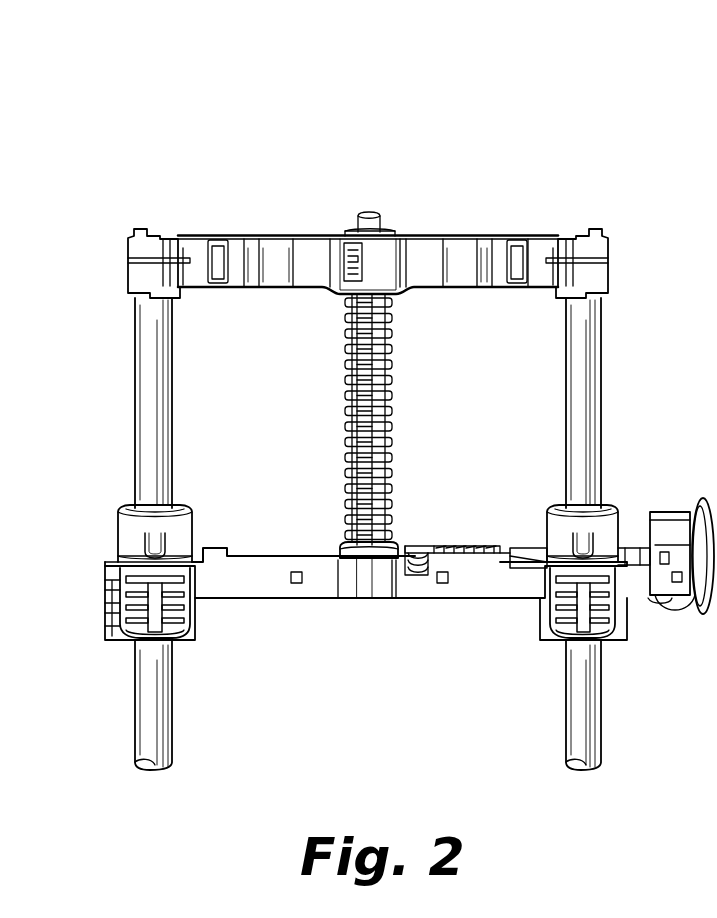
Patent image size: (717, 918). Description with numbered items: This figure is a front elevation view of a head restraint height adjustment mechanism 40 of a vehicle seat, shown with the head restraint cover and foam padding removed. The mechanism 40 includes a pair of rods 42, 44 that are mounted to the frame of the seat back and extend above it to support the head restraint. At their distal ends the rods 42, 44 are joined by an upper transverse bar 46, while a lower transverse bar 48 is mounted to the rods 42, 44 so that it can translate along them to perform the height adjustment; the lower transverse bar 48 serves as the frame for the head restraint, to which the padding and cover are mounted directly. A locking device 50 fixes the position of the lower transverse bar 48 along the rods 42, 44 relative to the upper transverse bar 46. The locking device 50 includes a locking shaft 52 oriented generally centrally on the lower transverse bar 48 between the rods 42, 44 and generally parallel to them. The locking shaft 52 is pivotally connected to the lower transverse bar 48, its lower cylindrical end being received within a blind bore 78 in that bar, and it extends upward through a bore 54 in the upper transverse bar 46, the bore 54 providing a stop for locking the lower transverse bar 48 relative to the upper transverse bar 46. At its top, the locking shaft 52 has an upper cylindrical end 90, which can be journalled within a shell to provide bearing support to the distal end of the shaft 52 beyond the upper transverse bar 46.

The head restraint height adjustment mechanism 40 is at (398, 100).
The rod 42 is at (603, 703).
The rod 44 is at (135, 700).
The upper transverse bar 46 is at (503, 235).
The lower transverse bar 48 is at (288, 600).
The locking device 50 is at (392, 541).
The locking shaft 52 is at (392, 428).
The bore 54 is at (391, 230).
The blind bore 78 is at (365, 557).
The upper cylindrical end 90 is at (369, 215).